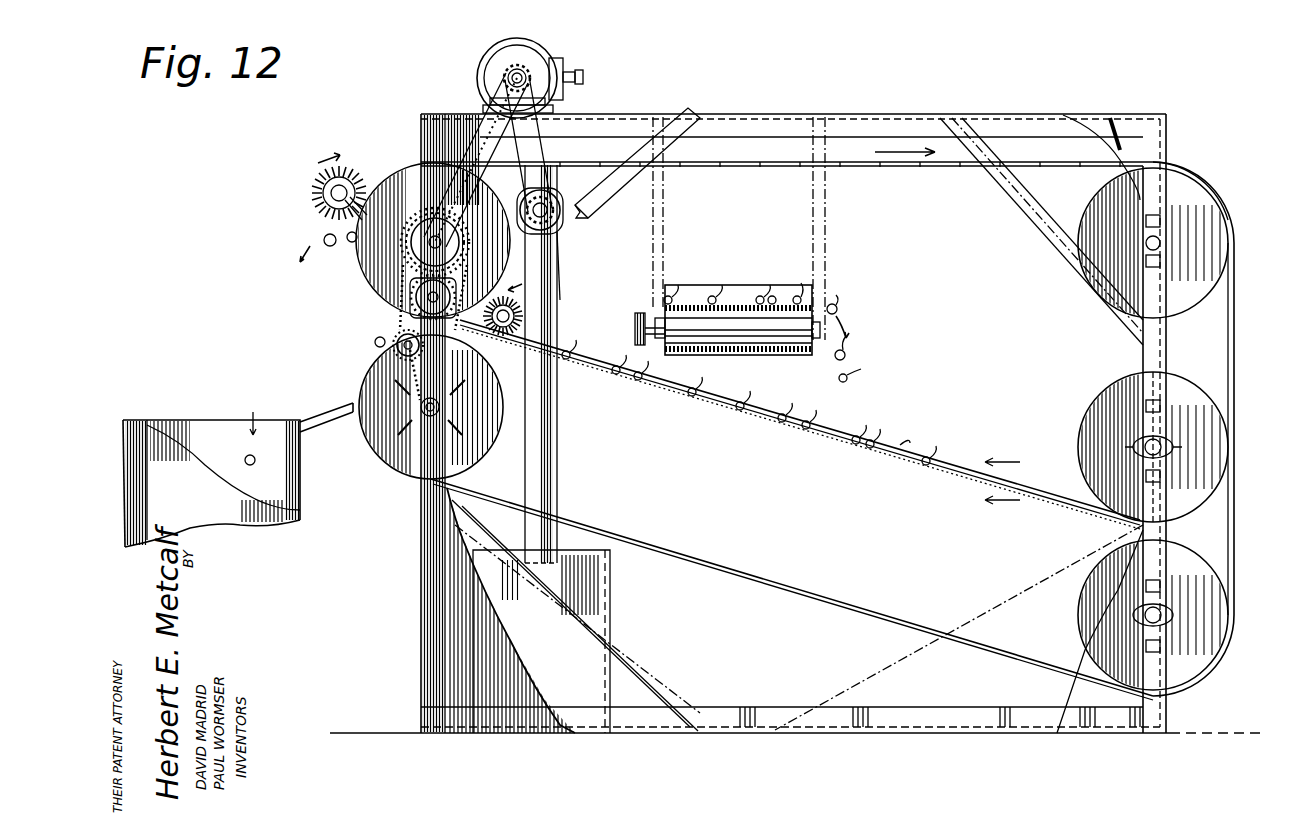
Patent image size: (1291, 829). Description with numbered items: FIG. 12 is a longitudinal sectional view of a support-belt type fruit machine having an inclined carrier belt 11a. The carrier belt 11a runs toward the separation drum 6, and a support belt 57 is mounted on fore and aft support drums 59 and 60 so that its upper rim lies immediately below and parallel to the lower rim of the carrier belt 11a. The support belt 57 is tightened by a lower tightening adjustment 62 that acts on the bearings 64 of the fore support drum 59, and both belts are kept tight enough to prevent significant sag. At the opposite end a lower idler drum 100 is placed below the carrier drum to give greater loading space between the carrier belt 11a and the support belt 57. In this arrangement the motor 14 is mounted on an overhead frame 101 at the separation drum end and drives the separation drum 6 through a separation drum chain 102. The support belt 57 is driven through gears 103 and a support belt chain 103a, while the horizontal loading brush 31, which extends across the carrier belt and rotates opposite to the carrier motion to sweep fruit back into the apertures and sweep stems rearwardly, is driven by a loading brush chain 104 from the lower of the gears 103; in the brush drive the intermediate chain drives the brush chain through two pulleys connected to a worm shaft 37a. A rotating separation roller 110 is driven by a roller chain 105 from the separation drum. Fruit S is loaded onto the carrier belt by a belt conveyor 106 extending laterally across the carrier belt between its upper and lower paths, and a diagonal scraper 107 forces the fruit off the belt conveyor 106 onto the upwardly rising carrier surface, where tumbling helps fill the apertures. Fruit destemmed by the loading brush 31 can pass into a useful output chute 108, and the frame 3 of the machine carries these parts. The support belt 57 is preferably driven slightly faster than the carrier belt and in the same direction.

The endless belt / frame 3 is at (443, 498).
The separation drum 6 is at (390, 257).
The carrier belt 11a is at (950, 460).
The motor 14 is at (487, 65).
The loading brush 31 is at (520, 307).
The worm shaft 37a is at (547, 187).
The support belt 57 is at (870, 457).
The fore support drum 59 is at (1200, 588).
The aft support drum 60 is at (473, 440).
The lower tightening adjustment 62 is at (1177, 447).
The fore support drum bearings 64 is at (1150, 413).
The lower idler drum 100 is at (1200, 483).
The overhead frame 101 is at (640, 125).
The separation drum chain 102 is at (487, 96).
The gears 103 is at (415, 292).
The support belt chain 103a is at (397, 330).
The loading brush chain 104 is at (490, 300).
The roller chain 105 is at (357, 217).
The belt conveyor 106 is at (807, 305).
The diagonal scraper 107 is at (715, 293).
The output chute 108 is at (217, 437).
The rotating separation roller 110 is at (318, 195).
The stock S is at (325, 188).